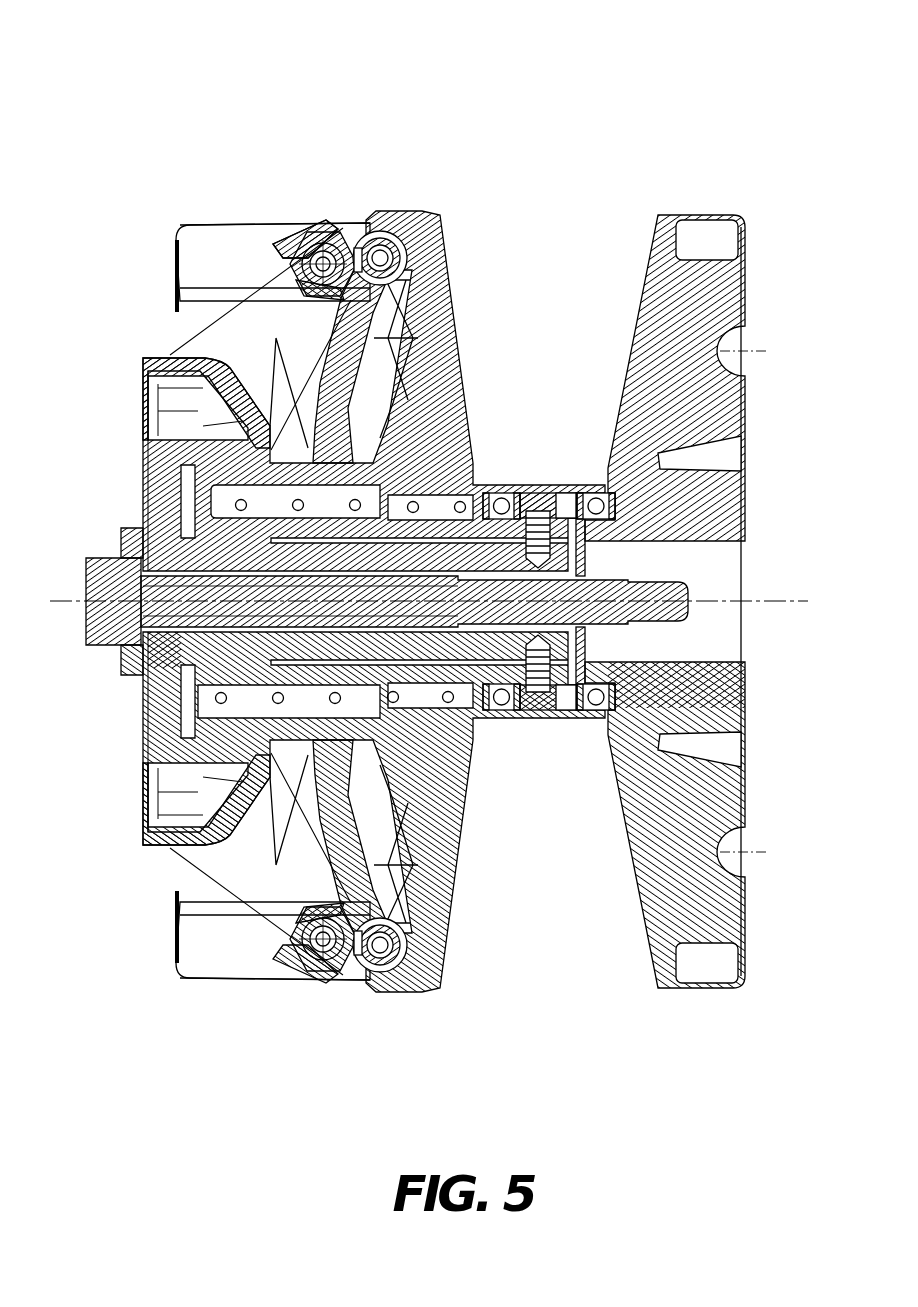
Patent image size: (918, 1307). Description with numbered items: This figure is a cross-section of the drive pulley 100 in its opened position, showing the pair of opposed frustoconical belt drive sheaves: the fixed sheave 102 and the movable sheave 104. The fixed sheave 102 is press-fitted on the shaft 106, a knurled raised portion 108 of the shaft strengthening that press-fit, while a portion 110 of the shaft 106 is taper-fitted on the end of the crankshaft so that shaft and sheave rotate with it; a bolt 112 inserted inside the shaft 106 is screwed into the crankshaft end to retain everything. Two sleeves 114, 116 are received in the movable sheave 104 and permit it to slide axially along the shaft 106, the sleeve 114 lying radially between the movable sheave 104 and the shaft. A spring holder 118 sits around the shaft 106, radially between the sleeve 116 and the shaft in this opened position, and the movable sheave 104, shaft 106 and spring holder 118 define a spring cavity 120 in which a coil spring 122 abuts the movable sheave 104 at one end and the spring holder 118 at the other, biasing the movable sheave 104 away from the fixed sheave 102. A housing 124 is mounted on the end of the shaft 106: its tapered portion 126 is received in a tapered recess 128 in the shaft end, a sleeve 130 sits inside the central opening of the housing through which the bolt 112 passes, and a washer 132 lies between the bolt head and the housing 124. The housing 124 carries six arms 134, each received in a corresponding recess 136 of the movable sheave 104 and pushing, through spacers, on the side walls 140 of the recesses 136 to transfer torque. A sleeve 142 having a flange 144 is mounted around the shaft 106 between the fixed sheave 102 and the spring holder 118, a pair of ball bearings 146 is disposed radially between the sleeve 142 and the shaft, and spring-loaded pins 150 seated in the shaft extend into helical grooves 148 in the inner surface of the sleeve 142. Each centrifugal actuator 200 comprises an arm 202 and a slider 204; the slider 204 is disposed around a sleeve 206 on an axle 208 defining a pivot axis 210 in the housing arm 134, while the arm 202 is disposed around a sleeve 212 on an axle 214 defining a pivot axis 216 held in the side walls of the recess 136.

The drive pulley 100 is at (444, 560).
The fixed sheave 102 is at (692, 295).
The movable sheave 104 is at (440, 368).
The shaft 106 is at (700, 668).
The raised portion 108 is at (737, 697).
The portion 110 is at (667, 531).
The bolt 112 is at (668, 604).
The sleeve 114 is at (200, 525).
The sleeve 116 is at (447, 723).
The spring holder 118 is at (468, 478).
The spring cavity 120 is at (263, 492).
The coil spring 122 is at (150, 745).
The housing 124 is at (163, 790).
The tapered portion 126 is at (167, 647).
The tapered recess 128 is at (173, 633).
The sleeve 130 is at (133, 560).
The washer 132 is at (118, 560).
The arm 134 is at (235, 332).
The recess 136 is at (232, 212).
The side wall 140 is at (190, 217).
The sleeve 142 is at (538, 480).
The flange 144 is at (612, 463).
The ball bearings 146 is at (492, 485).
The helical groove 148 is at (582, 480).
The spring-loaded pin 150 is at (560, 517).
The centrifugal actuator 200 is at (323, 583).
The arm 202 is at (405, 290).
The slider 204 is at (265, 258).
The sleeve 206 is at (293, 228).
The axle 208 is at (382, 226).
The axis 210 is at (318, 236).
The sleeve 212 is at (325, 262).
The axle 214 is at (362, 262).
The axis 216 is at (393, 262).